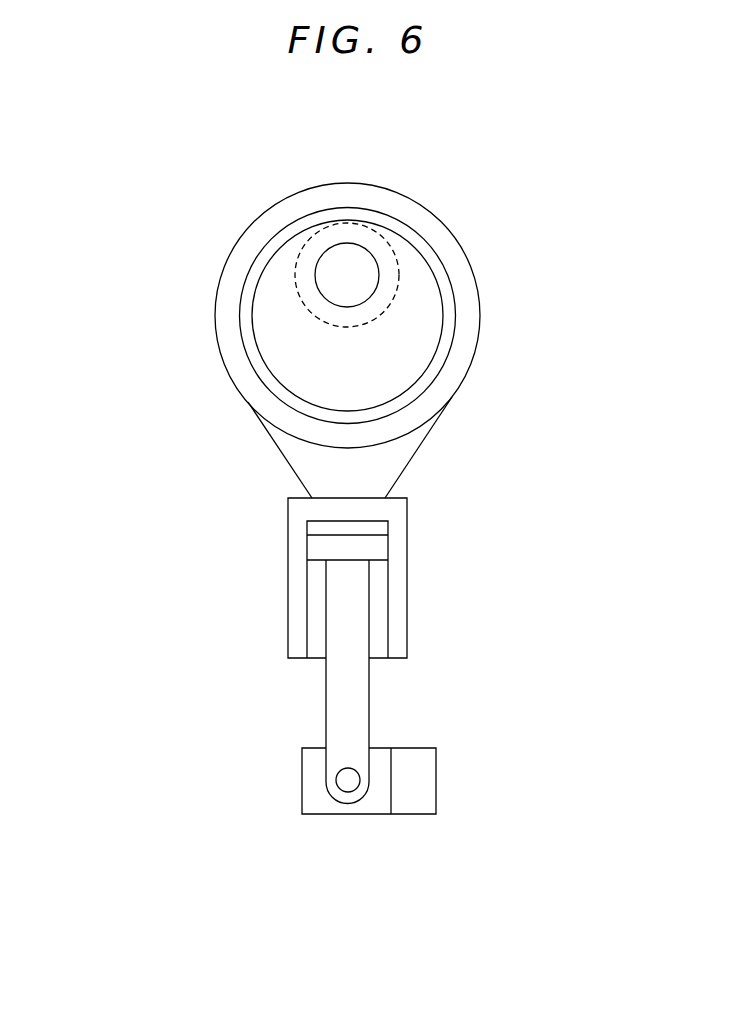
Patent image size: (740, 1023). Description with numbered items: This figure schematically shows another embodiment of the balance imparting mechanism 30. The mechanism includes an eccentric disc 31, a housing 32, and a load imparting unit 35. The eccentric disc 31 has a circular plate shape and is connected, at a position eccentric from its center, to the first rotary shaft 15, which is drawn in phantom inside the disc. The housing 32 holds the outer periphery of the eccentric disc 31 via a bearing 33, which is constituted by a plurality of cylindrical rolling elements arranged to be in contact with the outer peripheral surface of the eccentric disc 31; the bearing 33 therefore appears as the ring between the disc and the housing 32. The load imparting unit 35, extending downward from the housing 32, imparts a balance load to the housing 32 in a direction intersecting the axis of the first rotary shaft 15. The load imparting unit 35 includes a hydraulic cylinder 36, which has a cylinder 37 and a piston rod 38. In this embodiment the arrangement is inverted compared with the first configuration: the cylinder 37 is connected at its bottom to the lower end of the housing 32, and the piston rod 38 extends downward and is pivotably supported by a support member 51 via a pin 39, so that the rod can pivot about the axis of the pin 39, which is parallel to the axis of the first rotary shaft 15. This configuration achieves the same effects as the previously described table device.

The first rotary shaft 15 is at (373, 238).
The balance imparting mechanism 30 is at (158, 494).
The eccentric disc 31 is at (329, 260).
The housing 32 is at (475, 302).
The bearing 33 is at (437, 260).
The load imparting unit 35 is at (244, 687).
The hydraulic cylinder 36 is at (342, 651).
The cylinder 37 is at (385, 528).
The piston rod 38 is at (362, 614).
The pin 39 is at (348, 787).
The support member 51 is at (432, 784).